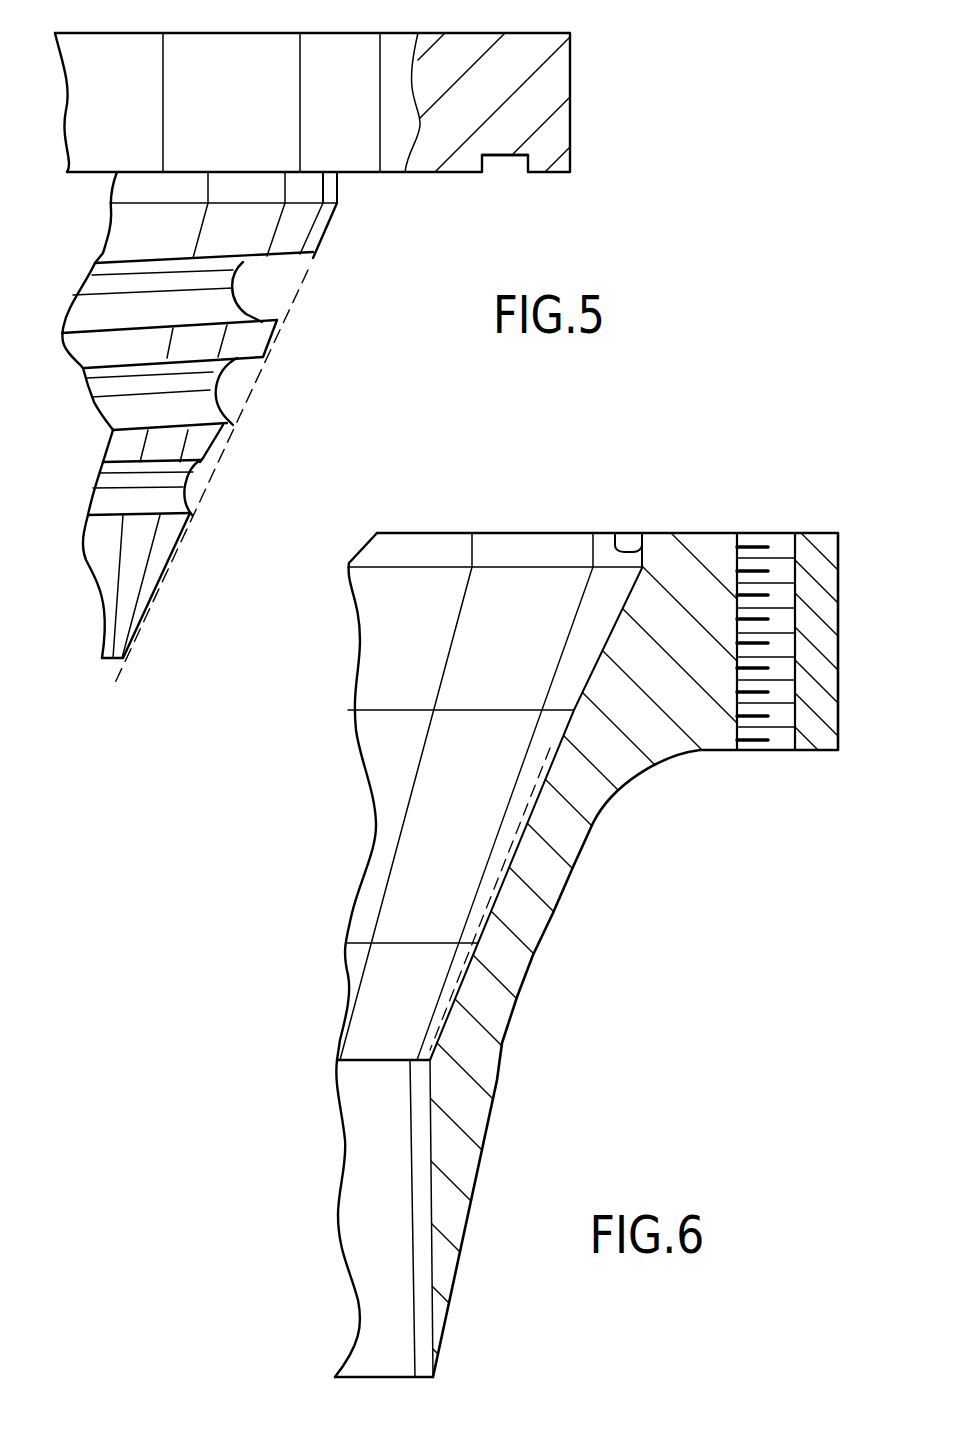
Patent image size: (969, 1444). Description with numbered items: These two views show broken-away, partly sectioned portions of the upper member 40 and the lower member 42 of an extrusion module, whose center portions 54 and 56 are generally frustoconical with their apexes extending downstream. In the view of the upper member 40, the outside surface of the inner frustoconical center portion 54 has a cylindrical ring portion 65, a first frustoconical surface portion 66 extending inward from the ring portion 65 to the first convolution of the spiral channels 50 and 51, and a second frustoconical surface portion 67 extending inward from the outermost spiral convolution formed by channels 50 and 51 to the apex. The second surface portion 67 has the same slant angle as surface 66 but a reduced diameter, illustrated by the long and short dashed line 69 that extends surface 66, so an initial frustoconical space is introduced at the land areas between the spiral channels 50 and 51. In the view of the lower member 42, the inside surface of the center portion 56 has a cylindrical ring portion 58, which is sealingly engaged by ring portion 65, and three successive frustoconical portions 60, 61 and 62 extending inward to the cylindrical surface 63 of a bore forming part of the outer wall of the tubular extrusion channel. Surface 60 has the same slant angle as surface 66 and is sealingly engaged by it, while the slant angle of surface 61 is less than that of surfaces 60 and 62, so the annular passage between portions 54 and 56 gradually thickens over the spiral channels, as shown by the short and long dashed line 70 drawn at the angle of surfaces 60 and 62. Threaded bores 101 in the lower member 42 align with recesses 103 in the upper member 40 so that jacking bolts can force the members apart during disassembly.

In FIG. 5, the upper member 40 is at (548, 87).
In FIG. 5, the recess 103 is at (502, 160).
In FIG. 5, the center portion 54 is at (100, 263).
In FIG. 5, the cylindrical ring portion 65 is at (335, 194).
In FIG. 5, the first frustoconical surface portion 66 is at (310, 240).
In FIG. 5, the spiral channel 50 is at (240, 287).
In FIG. 5, the spiral channel 51 is at (220, 383).
In FIG. 5, the long and short dashed line 69 is at (207, 485).
In FIG. 5, the second frustoconical surface portion 67 is at (147, 573).
In FIG. 6, the center portion 56 is at (530, 937).
In FIG. 6, the cylindrical ring portion 58 is at (617, 530).
In FIG. 6, the lower member 42 is at (699, 547).
In FIG. 6, the threaded bore 101 is at (780, 545).
In FIG. 6, the frustoconical portion 60 is at (603, 635).
In FIG. 6, the frustoconical portion 61 is at (510, 855).
In FIG. 6, the short and long dashed line 70 is at (487, 892).
In FIG. 6, the frustoconical portion 62 is at (445, 1003).
In FIG. 6, the cylindrical surface 63 is at (368, 1198).